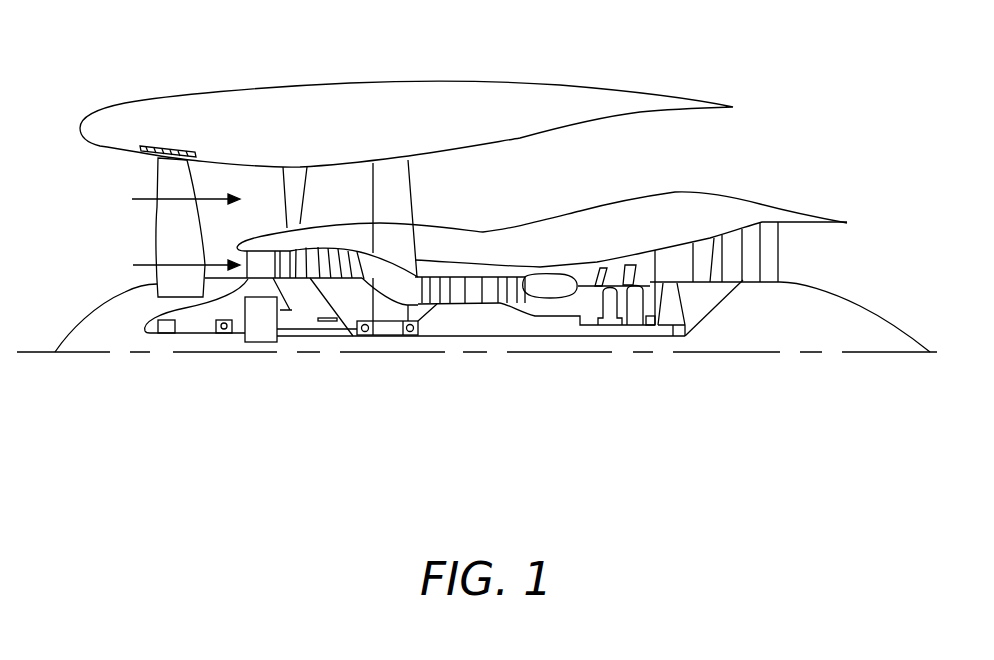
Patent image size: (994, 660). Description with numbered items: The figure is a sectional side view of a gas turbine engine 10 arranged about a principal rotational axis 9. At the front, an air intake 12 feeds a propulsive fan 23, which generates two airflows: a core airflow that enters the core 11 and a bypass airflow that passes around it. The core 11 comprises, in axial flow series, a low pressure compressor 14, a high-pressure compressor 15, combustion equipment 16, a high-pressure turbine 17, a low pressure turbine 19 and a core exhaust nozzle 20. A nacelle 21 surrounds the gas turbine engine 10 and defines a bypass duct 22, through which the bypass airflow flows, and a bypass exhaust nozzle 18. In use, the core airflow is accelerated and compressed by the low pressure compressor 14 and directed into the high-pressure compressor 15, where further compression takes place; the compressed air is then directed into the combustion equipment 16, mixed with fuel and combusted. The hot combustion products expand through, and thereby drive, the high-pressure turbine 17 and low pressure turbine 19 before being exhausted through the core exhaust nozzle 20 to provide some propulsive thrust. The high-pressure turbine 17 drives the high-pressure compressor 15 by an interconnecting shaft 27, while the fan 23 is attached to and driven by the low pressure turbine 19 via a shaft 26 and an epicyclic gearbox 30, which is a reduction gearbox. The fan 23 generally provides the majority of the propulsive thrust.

The principal rotational axis 9 is at (633, 353).
The gas turbine engine 10 is at (156, 97).
The core 11 is at (523, 246).
The air intake 12 is at (168, 249).
The low pressure compressor 14 is at (328, 253).
The high-pressure compressor 15 is at (476, 286).
The combustion equipment 16 is at (550, 290).
The high-pressure turbine 17 is at (612, 270).
The bypass exhaust nozzle 18 is at (739, 239).
The low pressure turbine 19 is at (752, 242).
The core exhaust nozzle 20 is at (824, 252).
The nacelle 21 is at (388, 97).
The bypass duct 22 is at (678, 163).
The propulsive fan 23 is at (161, 231).
The shaft 26 is at (470, 338).
The interconnecting shaft 27 is at (505, 338).
The epicyclic gearbox 30 is at (257, 332).